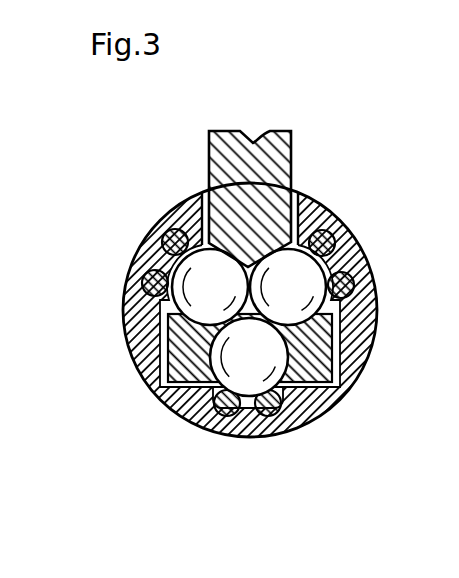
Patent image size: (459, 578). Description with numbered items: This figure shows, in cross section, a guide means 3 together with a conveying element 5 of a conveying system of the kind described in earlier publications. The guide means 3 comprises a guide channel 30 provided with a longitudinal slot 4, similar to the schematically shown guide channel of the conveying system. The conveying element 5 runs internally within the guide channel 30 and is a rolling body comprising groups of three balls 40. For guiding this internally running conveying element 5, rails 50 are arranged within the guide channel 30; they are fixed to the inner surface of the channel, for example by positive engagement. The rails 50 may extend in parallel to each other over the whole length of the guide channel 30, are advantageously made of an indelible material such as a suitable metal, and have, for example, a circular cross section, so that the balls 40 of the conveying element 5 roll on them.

The guide means 3 is at (126, 387).
The guide channel 30 is at (150, 231).
The longitudinal slot 4 is at (298, 178).
The conveying element 5 is at (270, 121).
The balls 40 is at (250, 345).
The rails 50 is at (235, 405).